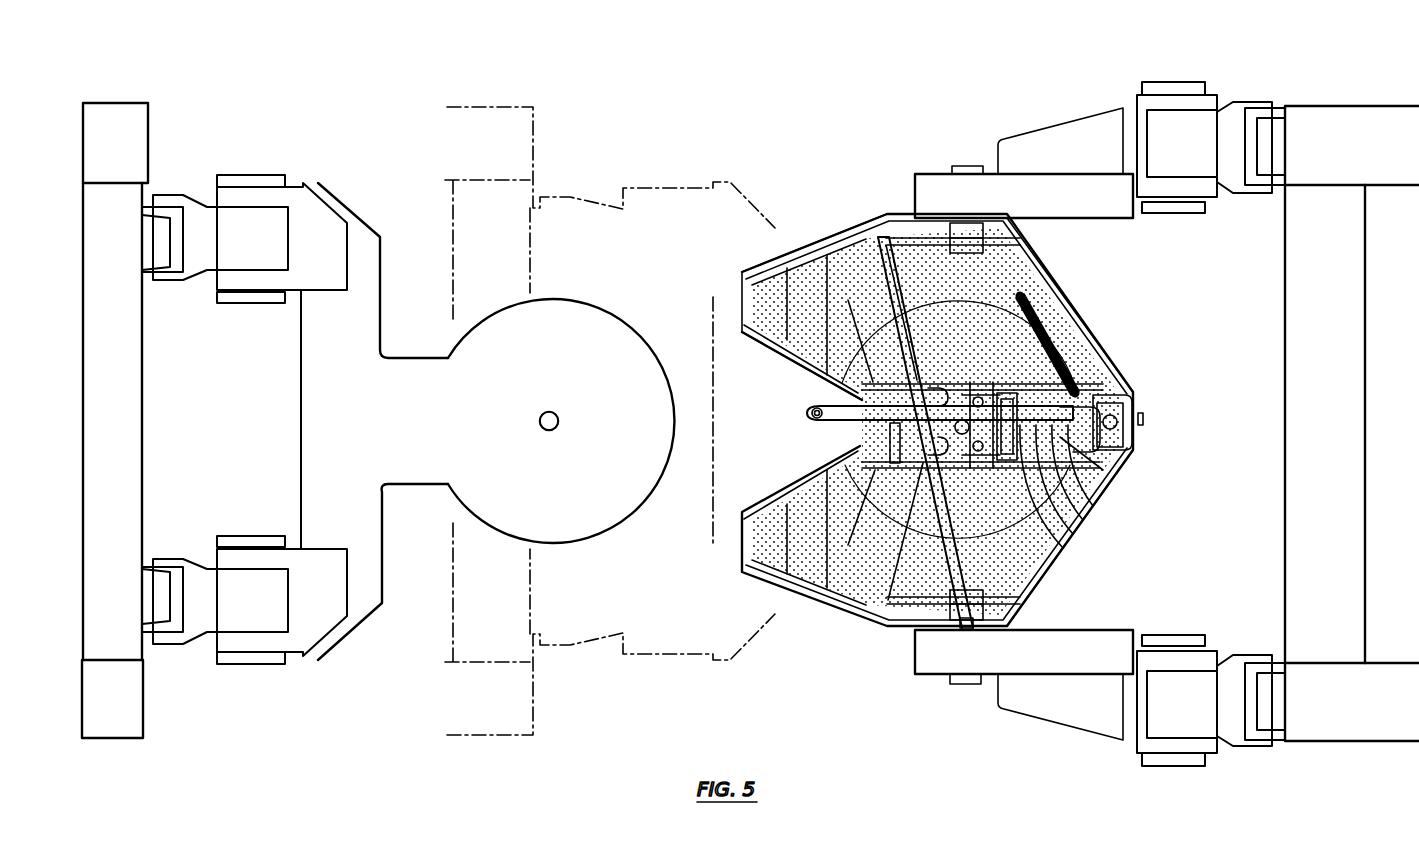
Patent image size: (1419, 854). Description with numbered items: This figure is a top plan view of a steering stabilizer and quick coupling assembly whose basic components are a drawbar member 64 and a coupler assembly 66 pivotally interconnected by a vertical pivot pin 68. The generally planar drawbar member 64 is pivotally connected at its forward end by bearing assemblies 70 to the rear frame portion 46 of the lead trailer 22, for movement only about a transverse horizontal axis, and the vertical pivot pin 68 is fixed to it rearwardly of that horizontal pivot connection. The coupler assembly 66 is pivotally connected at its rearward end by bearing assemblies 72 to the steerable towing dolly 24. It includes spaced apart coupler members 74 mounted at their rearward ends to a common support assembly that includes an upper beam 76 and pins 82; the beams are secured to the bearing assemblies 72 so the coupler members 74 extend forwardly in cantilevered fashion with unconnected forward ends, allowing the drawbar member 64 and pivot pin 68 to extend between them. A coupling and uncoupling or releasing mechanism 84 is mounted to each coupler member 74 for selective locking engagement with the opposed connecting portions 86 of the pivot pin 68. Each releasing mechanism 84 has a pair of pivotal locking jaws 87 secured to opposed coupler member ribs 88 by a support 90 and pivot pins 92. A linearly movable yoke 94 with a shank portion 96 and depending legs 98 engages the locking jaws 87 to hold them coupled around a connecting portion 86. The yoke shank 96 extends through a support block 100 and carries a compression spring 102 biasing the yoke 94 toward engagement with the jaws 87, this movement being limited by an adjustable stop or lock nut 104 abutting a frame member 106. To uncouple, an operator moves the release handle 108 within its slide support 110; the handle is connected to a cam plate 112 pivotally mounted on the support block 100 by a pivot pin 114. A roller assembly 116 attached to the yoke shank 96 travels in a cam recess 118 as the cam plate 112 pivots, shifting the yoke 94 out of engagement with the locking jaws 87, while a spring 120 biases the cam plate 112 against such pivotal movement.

The lead trailer 22 is at (126, 100).
The steerable towing dolly 24 is at (1331, 422).
The rear frame portion 46 is at (122, 402).
The drawbar member 64 is at (405, 348).
The coupler assembly 66 is at (872, 636).
The vertical pivot pin 68 is at (561, 427).
The bearing assemblies 70 is at (251, 173).
The bearing assemblies 72 is at (1178, 78).
The coupler members 74 is at (770, 293).
The upper beam 76 is at (1055, 195).
The pins 82 is at (957, 165).
The coupling and uncoupling or releasing mechanism 84 is at (963, 320).
The connecting portions 86 is at (546, 411).
The pivotal locking jaws 87 is at (935, 389).
The coupler member ribs 88 is at (1090, 378).
The support 90 is at (966, 395).
The pivot pins 92 is at (978, 397).
The yoke 94 is at (1008, 398).
The shank portion 96 is at (1073, 534).
The depending legs 98 is at (940, 378).
The support block 100 is at (1128, 398).
The compression spring 102 is at (1063, 548).
The adjustable stop or lock nut 104 is at (1145, 417).
The frame member 106 is at (1080, 447).
The release handle 108 is at (833, 415).
The slide support 110 is at (966, 627).
The cam plate 112 is at (1103, 470).
The pivot pin 114 is at (1118, 428).
The roller assembly 116 is at (1083, 520).
The cam recess 118 is at (1093, 506).
The spring 120 is at (1055, 335).